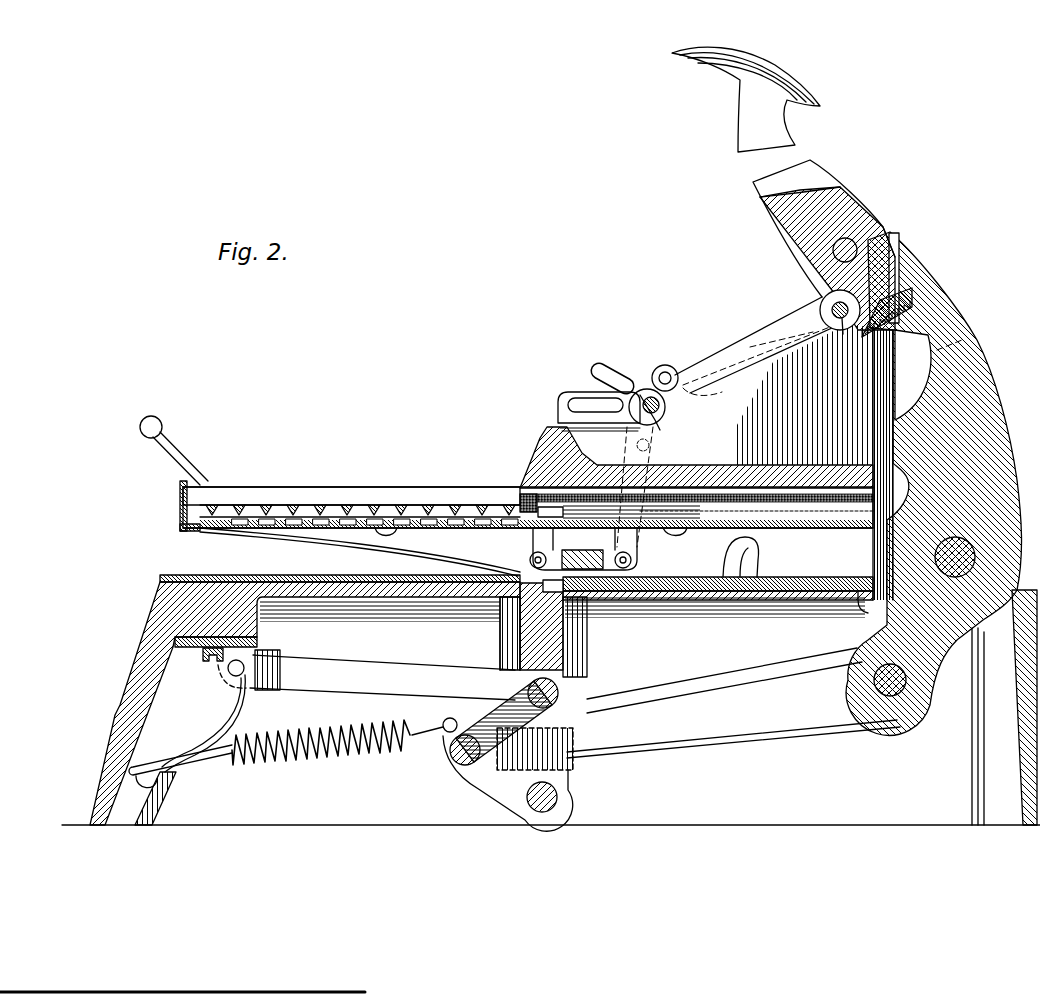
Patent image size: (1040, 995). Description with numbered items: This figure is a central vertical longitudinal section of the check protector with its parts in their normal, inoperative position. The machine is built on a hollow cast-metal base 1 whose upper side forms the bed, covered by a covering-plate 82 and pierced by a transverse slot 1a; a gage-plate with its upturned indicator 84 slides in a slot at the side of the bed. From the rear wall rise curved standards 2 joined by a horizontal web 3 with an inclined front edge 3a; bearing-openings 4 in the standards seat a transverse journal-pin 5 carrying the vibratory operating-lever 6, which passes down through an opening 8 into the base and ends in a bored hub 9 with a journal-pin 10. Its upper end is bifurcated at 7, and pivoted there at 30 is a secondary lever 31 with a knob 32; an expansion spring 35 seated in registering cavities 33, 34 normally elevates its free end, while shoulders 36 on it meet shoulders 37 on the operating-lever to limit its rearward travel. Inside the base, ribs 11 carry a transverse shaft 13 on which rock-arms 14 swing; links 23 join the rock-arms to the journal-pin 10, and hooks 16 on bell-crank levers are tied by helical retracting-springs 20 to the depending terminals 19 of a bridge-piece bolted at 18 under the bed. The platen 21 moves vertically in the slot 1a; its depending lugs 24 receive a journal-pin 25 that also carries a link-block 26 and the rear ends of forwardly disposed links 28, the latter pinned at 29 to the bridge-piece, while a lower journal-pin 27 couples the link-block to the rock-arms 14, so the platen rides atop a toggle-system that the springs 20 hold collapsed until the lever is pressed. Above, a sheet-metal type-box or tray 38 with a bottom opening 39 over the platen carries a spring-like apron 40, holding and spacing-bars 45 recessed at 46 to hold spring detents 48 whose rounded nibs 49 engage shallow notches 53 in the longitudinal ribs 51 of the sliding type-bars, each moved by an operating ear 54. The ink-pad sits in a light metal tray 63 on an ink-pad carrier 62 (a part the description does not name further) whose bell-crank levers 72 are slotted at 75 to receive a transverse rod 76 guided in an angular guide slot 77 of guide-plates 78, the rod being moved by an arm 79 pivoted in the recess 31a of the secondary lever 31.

The hollow cast-metal base 1 is at (145, 649).
The transverse slot 1a is at (520, 600).
The curved standards 2 is at (776, 432).
The horizontal web 3 is at (760, 470).
The inclined front edge 3a is at (540, 434).
The bearing-openings 4 is at (151, 426).
The transverse journal-pin 5 is at (968, 546).
The vibratory operating-lever 6 is at (968, 322).
The slotted or bifurcated upper end 7 is at (832, 288).
The opening in the base 8 is at (861, 602).
The transversely bored hub 9 is at (908, 722).
The journal-pin 10 is at (906, 688).
The thickened portions or ribs 11 is at (590, 668).
The transverse shaft 13 is at (560, 797).
The rock-arms 14 is at (492, 784).
The hooks 16 is at (592, 710).
The bolts 18 is at (210, 664).
The depending terminals of the bridge-piece 19 is at (176, 772).
The helical retracting-springs 20 is at (306, 740).
The platen 21 is at (528, 636).
The links 23 is at (768, 680).
The depending lugs 24 is at (612, 678).
The transverse journal-pin 25 is at (515, 698).
The link-block 26 is at (553, 743).
The transverse journal-pin 27 is at (450, 743).
The forwardly disposed links 28 is at (362, 690).
The pins 29 is at (244, 684).
The pivot 30 is at (832, 250).
The secondary lever 31 is at (747, 195).
The recess of the secondary lever 31a is at (822, 306).
The knob 32 is at (715, 71).
The cavity 33 is at (915, 268).
The cavity 34 is at (950, 318).
The expansion spring 35 is at (930, 292).
The shoulders 36 is at (900, 222).
The shoulders 37 is at (903, 233).
The type-box or tray 38 is at (180, 503).
The transverse opening 39 is at (505, 529).
The spring-like apron 40 is at (326, 541).
The holding and spacing-bars 45 is at (226, 490).
The recess 46 is at (540, 487).
The spring detent 48 is at (563, 498).
The rounded nib 49 is at (521, 487).
The longitudinally disposed rib 51 is at (278, 505).
The shallow notches 53 is at (372, 505).
The operating ear or handle 54 is at (165, 425).
The bracket 62 is at (593, 498).
The light metal tray 63 is at (636, 562).
The bell-crank levers 72 is at (633, 386).
The slots 75 is at (599, 371).
The transverse rod 76 is at (668, 412).
The angular guide slot 77 is at (672, 371).
The guide-plates 78 is at (558, 408).
The arm 79 is at (756, 347).
The covering-plate 82 is at (201, 575).
The upturned indicator 84 is at (758, 552).